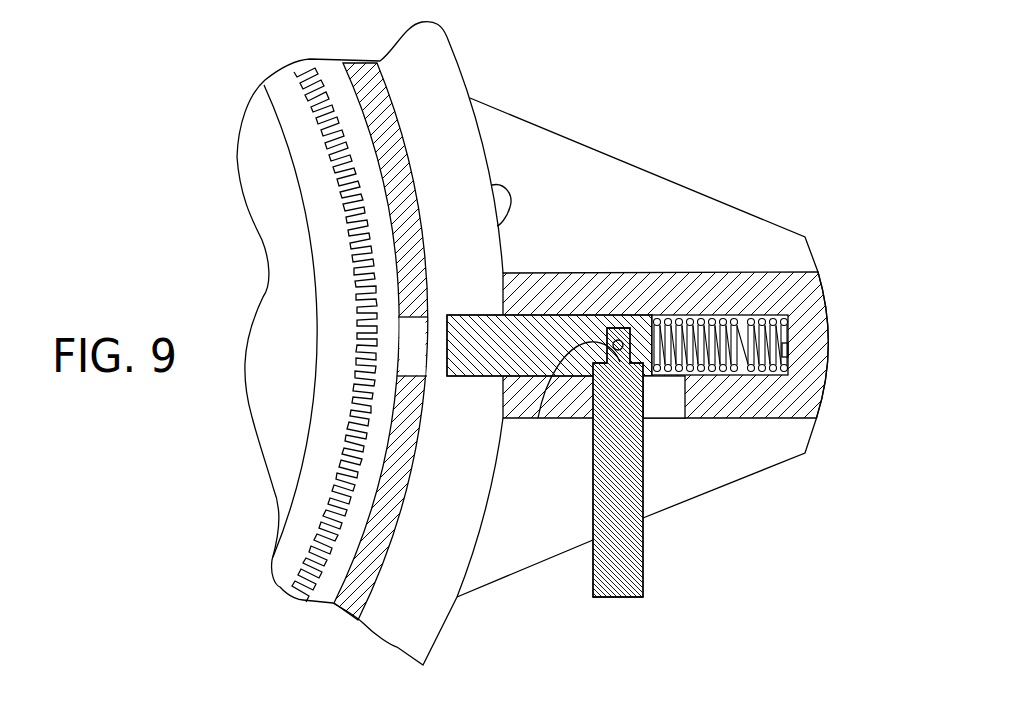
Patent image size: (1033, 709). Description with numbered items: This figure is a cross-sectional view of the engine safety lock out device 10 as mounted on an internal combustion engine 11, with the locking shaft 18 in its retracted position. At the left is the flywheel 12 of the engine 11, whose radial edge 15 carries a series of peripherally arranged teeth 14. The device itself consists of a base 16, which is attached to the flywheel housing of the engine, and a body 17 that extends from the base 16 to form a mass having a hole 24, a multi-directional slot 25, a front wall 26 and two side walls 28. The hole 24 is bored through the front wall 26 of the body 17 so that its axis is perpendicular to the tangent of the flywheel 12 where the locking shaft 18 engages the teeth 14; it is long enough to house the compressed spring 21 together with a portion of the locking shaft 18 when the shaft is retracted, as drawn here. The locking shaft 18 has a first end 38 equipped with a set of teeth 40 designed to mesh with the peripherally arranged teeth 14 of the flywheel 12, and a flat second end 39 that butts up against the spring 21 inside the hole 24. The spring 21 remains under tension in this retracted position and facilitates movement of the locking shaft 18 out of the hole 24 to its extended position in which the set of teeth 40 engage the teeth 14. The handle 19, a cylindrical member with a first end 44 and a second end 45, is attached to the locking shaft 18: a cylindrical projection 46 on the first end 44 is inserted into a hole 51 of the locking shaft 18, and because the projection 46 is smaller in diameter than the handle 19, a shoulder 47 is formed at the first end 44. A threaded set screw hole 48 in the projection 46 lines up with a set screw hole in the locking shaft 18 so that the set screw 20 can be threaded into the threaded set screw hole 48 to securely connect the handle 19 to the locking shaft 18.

The engine safety lock out device 10 is at (706, 80).
The internal combustion engine 11 is at (187, 100).
The flywheel 12 is at (301, 362).
The peripherally arranged teeth 14 is at (330, 73).
The radial edge 15 is at (305, 172).
The base 16 is at (633, 212).
The body 17 is at (827, 342).
The locking shaft 18 is at (470, 315).
The handle 19 is at (645, 547).
The set screw 20 is at (645, 273).
The spring 21 is at (767, 377).
The hole 24 is at (472, 378).
The multi-directional slot 25 is at (677, 420).
The front wall 26 is at (490, 296).
The side walls 28 is at (633, 273).
The first end 38 is at (450, 380).
The second end 39 is at (720, 273).
The set of teeth 40 is at (445, 341).
The first end 44 is at (550, 378).
The second end 45 is at (615, 598).
The projection 46 is at (616, 341).
The shoulder 47 is at (657, 420).
The threaded set screw hole 48 is at (561, 400).
The hole 51 is at (666, 273).